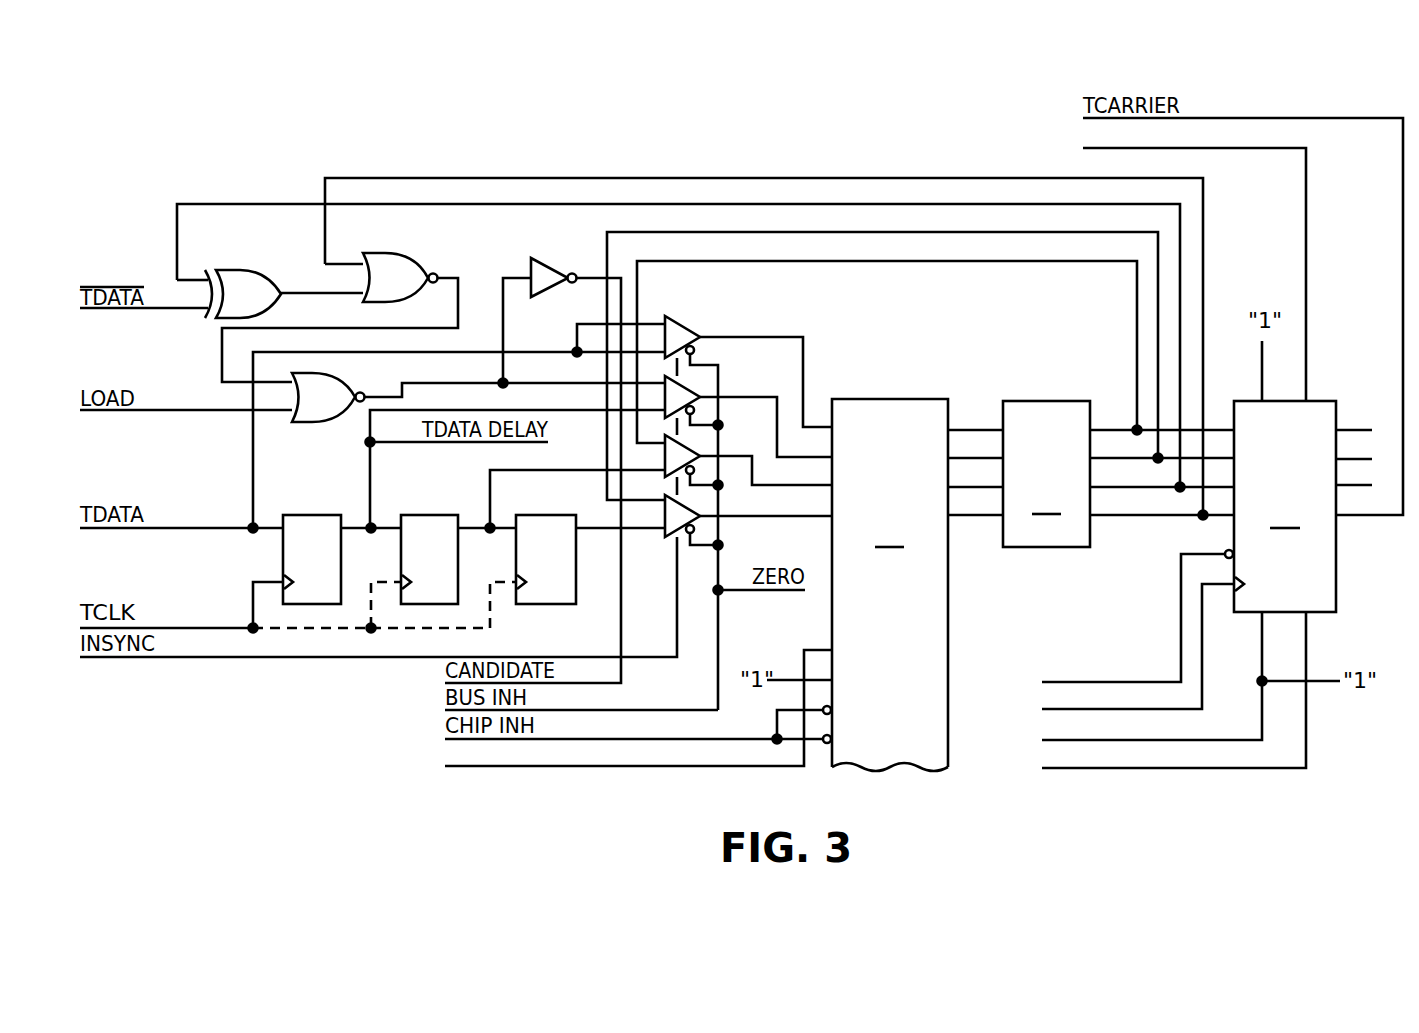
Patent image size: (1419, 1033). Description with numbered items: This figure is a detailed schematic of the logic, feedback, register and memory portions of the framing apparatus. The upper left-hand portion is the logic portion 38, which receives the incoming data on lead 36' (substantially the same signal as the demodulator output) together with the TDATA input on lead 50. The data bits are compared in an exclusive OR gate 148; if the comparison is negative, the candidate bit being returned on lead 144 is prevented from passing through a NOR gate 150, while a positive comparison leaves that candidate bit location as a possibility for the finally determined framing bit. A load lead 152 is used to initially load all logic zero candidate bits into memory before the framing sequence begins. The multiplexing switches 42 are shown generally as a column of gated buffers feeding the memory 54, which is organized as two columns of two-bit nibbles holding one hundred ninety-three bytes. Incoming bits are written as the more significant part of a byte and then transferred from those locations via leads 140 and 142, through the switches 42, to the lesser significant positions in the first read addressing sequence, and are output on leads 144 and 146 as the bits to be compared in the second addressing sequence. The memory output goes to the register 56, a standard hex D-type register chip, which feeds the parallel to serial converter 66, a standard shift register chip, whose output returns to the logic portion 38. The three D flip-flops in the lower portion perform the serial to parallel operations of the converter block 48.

The lead 36' is at (144, 333).
The logic block 38 is at (497, 250).
The multiplexing switch 42 is at (693, 315).
The serial to parallel converter block 48 is at (352, 692).
The lead 50 is at (205, 530).
The memory 54 is at (890, 585).
The register 56 is at (1046, 474).
The parallel to serial converter block 66 is at (1222, 443).
The lead 140 is at (1012, 263).
The lead 142 is at (920, 234).
The lead 144 is at (906, 176).
The lead 146 is at (805, 202).
The exclusive OR gate 148 is at (243, 268).
The NOR gate 150 is at (382, 252).
The load lead 152 is at (202, 413).